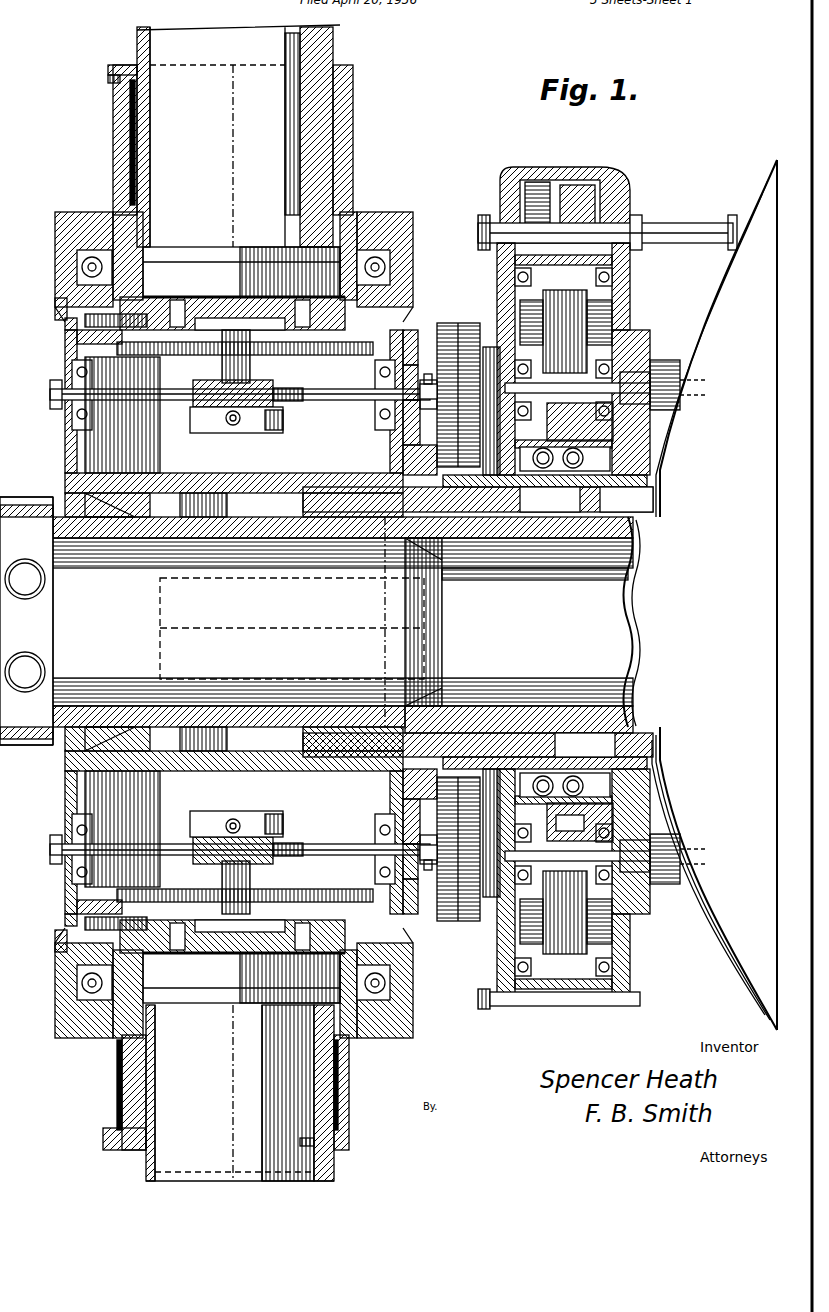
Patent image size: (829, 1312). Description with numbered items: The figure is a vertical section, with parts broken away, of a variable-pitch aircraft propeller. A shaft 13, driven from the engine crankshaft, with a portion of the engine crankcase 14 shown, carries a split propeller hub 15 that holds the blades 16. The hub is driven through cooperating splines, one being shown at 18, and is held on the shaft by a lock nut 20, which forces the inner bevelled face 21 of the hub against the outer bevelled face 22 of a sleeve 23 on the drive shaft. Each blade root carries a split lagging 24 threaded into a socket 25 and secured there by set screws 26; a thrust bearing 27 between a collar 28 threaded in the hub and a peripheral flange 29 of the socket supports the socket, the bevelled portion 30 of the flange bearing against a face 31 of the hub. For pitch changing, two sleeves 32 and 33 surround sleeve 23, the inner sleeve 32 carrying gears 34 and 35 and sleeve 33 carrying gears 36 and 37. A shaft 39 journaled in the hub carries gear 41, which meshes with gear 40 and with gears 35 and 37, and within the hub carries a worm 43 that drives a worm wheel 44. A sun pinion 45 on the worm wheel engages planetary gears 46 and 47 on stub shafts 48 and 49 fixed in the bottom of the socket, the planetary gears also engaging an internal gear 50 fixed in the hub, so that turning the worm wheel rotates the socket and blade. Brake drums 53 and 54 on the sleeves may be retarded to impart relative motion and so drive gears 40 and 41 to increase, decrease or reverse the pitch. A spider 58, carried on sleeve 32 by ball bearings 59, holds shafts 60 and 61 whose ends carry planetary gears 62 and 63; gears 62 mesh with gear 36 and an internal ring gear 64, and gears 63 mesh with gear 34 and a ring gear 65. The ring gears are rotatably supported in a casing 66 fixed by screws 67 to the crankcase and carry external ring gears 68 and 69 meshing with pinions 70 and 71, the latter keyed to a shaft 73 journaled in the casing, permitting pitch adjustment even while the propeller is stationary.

The shaft 13 is at (135, 708).
The engine crankcase 14 is at (704, 602).
The split propeller hub 15 is at (76, 463).
The blades 16 is at (150, 43).
The spline 18 is at (165, 520).
The lock nut 20 is at (25, 535).
The inner bevelled face 21 is at (82, 266).
The outer bevelled face 22 is at (436, 714).
The sleeve 23 is at (495, 725).
The split lagging 24 is at (142, 136).
The socket 25 is at (127, 179).
The set screws 26 is at (112, 77).
The thrust bearing 27 is at (226, 512).
The collar 28 is at (80, 214).
The peripheral flange 29 is at (82, 321).
The bevelled portion 30 is at (406, 330).
The face 31 is at (62, 306).
The inner sleeve 32 is at (550, 499).
The sleeve 33 is at (428, 448).
The gear 34 is at (619, 499).
The gear 35 is at (428, 465).
The gear 36 is at (478, 745).
The gear 37 is at (438, 798).
The shaft 39 is at (152, 398).
The gear 40 is at (440, 340).
The gear 41 is at (488, 347).
The worm 43 is at (192, 421).
The worm wheel 44 is at (300, 392).
The sun pinion 45 is at (224, 373).
The planetary gear 46 is at (140, 392).
The planetary gear 47 is at (332, 356).
The stub shaft 48 is at (190, 289).
The stub shaft 49 is at (296, 321).
The internal gear 50 is at (78, 338).
The brake drum 53 is at (590, 470).
The brake drum 54 is at (478, 499).
The spider 58 is at (580, 622).
The ball bearings 59 is at (585, 745).
The shaft 60 is at (540, 395).
The shaft 61 is at (540, 858).
The planetary gears 62 is at (565, 622).
The planetary gears 63 is at (616, 340).
The internal ring gear 64 is at (525, 318).
The internal ring gear 65 is at (600, 320).
The casing 66 is at (624, 196).
The screws 67 is at (680, 385).
The external ring gear 68 is at (517, 278).
The external ring gear 69 is at (608, 278).
The pinion 70 is at (535, 185).
The pinion 71 is at (575, 190).
The shaft 73 is at (616, 232).